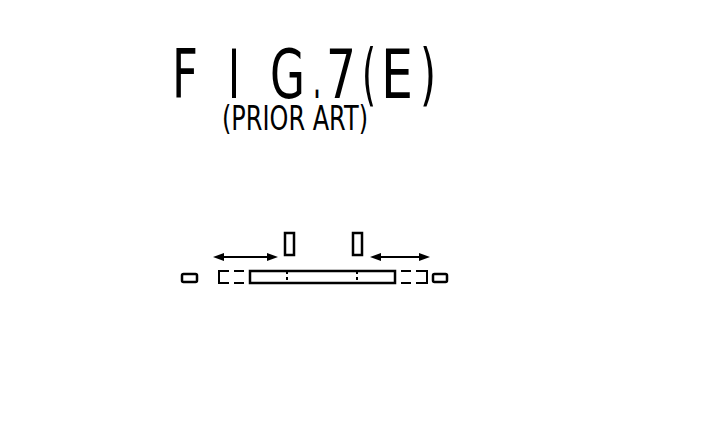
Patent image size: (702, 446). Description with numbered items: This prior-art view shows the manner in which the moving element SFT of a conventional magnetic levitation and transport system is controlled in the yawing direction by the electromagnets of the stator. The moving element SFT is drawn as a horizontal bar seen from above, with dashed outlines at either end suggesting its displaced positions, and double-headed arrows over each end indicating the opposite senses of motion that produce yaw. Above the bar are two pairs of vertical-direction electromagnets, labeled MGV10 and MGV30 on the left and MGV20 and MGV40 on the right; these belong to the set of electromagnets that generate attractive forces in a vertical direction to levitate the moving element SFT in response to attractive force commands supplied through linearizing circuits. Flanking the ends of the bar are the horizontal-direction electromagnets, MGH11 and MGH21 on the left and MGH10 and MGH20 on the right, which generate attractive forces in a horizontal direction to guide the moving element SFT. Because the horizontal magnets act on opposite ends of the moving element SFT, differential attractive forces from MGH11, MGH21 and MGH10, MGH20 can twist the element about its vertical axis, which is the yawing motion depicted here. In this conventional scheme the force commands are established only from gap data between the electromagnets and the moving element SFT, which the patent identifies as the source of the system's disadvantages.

The moving element SFT is at (348, 283).
The electromagnet MGV10 is at (284, 207).
The electromagnet MGV20 is at (387, 207).
The electromagnet MGV30 is at (284, 222).
The electromagnet MGV40 is at (387, 222).
The electromagnet MGH10 is at (418, 339).
The electromagnet MGH20 is at (440, 283).
The electromagnet MGH11 is at (190, 324).
The electromagnet MGH21 is at (190, 283).